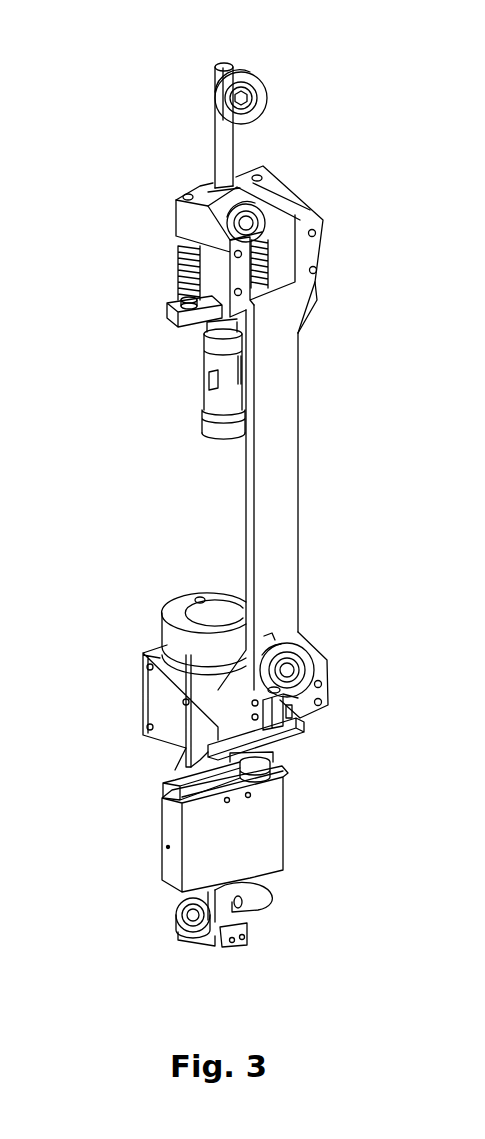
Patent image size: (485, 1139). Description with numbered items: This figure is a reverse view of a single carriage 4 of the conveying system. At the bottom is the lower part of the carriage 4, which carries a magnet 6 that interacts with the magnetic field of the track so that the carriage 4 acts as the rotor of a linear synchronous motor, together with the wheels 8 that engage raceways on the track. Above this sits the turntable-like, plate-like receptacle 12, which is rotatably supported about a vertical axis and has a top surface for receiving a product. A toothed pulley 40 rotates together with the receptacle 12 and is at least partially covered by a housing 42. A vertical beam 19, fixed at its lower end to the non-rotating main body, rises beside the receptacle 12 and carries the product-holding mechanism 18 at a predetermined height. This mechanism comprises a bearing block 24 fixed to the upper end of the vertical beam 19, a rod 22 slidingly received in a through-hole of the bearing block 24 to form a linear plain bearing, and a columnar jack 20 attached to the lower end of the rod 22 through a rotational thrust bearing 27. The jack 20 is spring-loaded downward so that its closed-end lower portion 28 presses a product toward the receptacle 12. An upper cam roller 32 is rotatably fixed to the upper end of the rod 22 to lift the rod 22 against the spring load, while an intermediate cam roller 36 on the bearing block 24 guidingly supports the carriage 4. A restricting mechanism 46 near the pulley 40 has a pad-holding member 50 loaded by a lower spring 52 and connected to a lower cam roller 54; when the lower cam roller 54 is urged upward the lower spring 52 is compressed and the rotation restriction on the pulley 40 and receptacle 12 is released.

The carriage 4 is at (155, 72).
The rod 22 is at (236, 158).
The upper cam roller 32 is at (263, 87).
The bearing block 24 is at (275, 185).
The intermediate cam roller 36 is at (300, 212).
The product-holding mechanism 18 is at (135, 247).
The rotational thrust bearing 27 is at (192, 341).
The jack 20 is at (193, 373).
The lower portion 28 is at (203, 434).
The vertical beam 19 is at (298, 473).
The restricting mechanism 46 is at (325, 640).
The lower cam roller 54 is at (320, 670).
The lower spring 52 is at (284, 700).
The pad-holding member 50 is at (282, 717).
The receptacle 12 is at (164, 616).
The housing 42 is at (142, 707).
The pulley 40 is at (183, 732).
The roller 8 is at (277, 763).
The magnet 6 is at (284, 855).